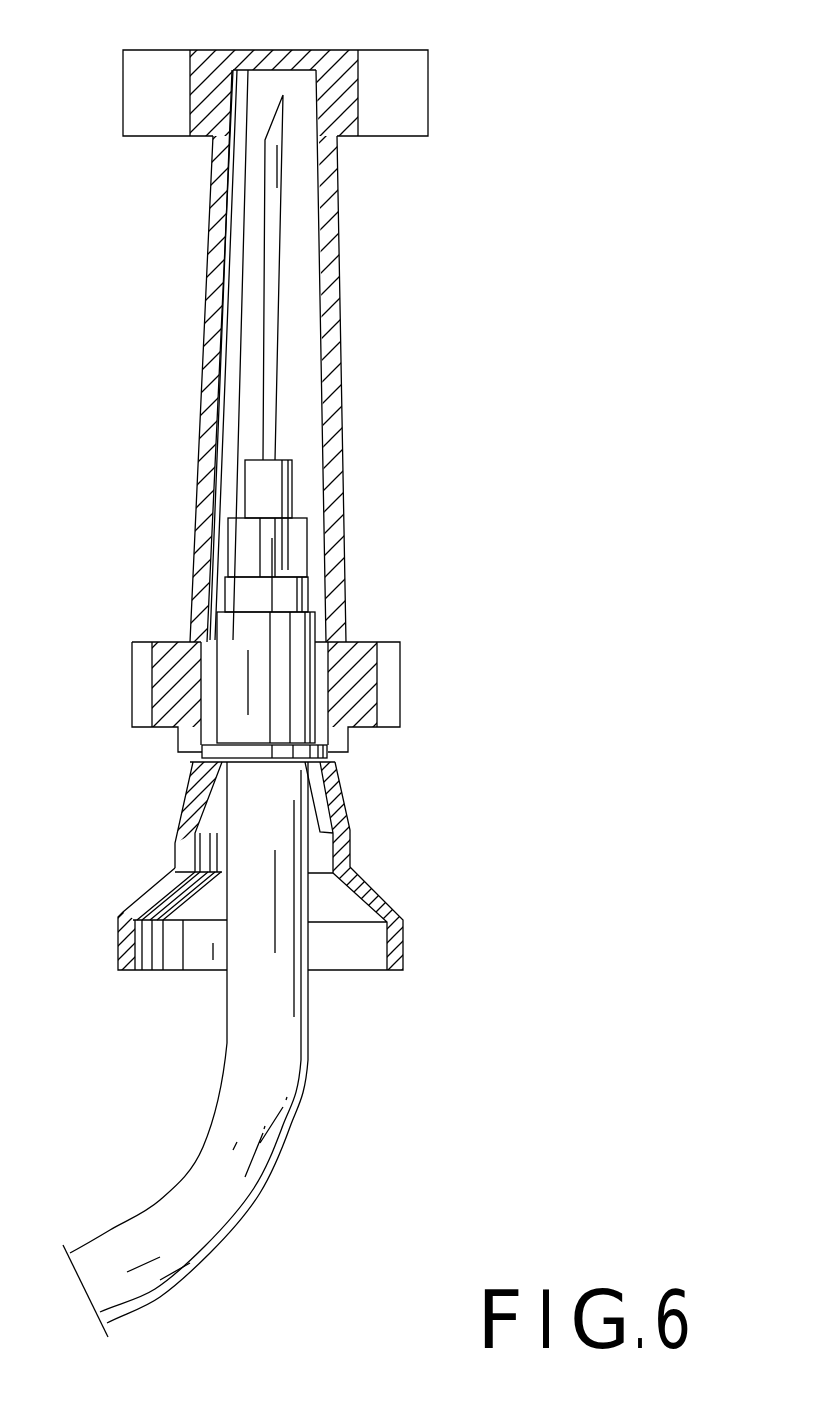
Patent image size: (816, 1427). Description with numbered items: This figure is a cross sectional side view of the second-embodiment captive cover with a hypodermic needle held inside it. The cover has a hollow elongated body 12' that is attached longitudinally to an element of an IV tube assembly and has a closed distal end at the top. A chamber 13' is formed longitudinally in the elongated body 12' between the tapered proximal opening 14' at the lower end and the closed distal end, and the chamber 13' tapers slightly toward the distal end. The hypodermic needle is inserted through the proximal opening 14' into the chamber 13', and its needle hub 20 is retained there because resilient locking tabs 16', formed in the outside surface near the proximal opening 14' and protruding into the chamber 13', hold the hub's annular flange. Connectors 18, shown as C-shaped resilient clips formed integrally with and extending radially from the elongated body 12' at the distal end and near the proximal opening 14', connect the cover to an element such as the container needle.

The connector 18 is at (393, 54).
The elongated body 12' is at (349, 356).
The chamber 13' is at (181, 355).
The needle hub 20 is at (225, 628).
The locking tab 16' is at (311, 817).
The proximal opening 14' is at (294, 949).